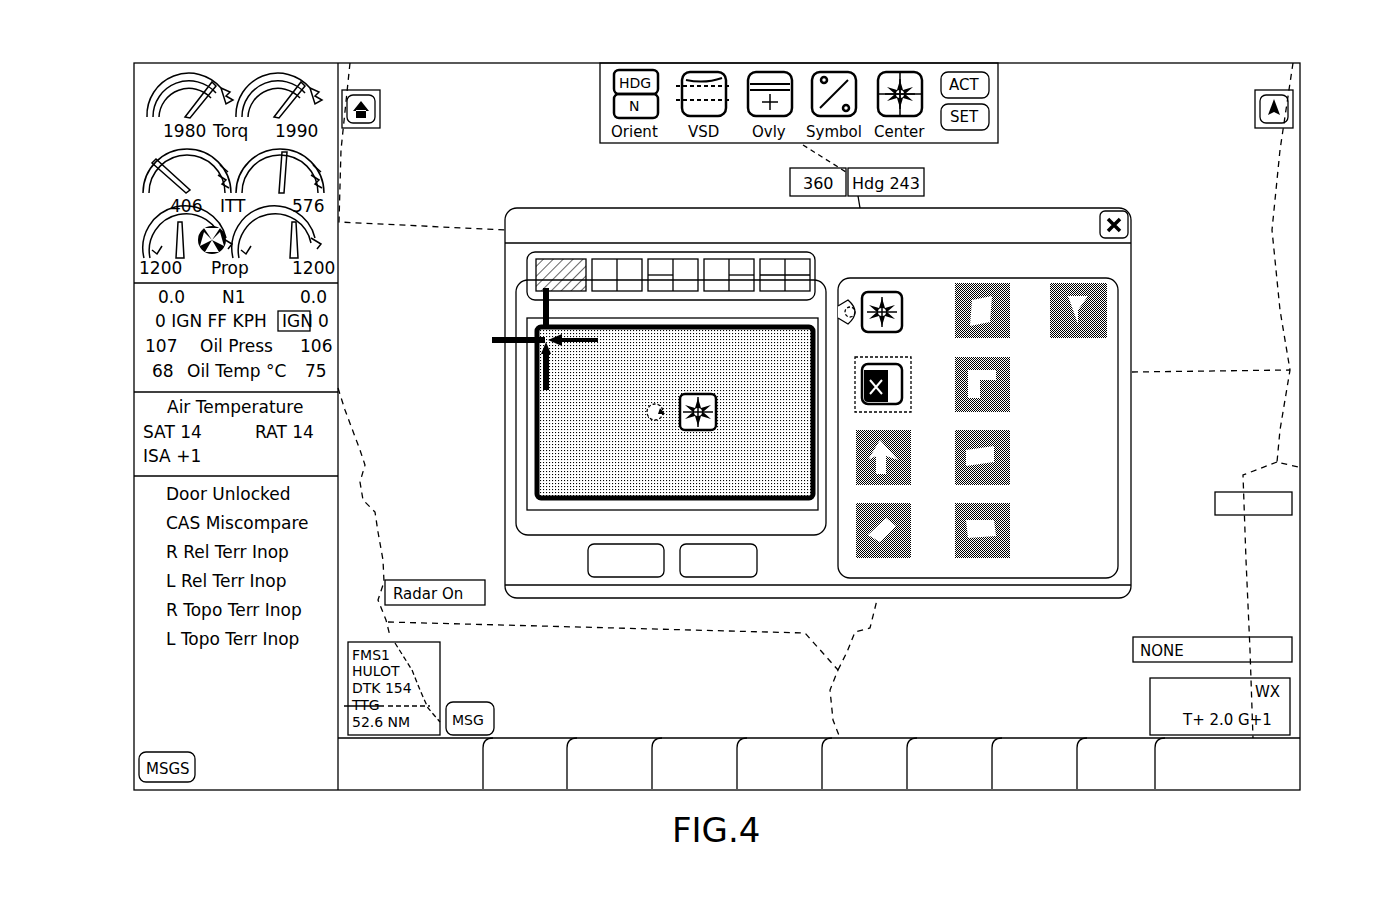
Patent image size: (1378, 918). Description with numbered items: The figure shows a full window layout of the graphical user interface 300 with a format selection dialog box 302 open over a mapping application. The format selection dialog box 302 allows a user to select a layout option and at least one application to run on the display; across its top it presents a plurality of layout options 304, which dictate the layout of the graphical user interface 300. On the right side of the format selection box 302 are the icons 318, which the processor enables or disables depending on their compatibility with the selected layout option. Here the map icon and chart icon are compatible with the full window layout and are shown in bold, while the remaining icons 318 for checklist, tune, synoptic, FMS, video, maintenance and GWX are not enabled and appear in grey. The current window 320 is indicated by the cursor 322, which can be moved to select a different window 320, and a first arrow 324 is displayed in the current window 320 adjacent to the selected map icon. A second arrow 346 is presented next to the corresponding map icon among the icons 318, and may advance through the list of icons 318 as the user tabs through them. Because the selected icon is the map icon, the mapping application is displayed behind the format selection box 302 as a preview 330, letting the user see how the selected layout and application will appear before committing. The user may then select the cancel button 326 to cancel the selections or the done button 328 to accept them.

The graphical user interface 300 is at (1018, 52).
The format selection dialog box 302 is at (1040, 205).
The layout options 304 is at (530, 272).
The icons 318 is at (978, 413).
The window 320 is at (537, 470).
The cursor 322 is at (492, 338).
The first arrow 324 is at (668, 402).
The cancel button 326 is at (622, 578).
The done button 328 is at (718, 578).
The preview 330 is at (1250, 255).
The second arrow 346 is at (846, 304).